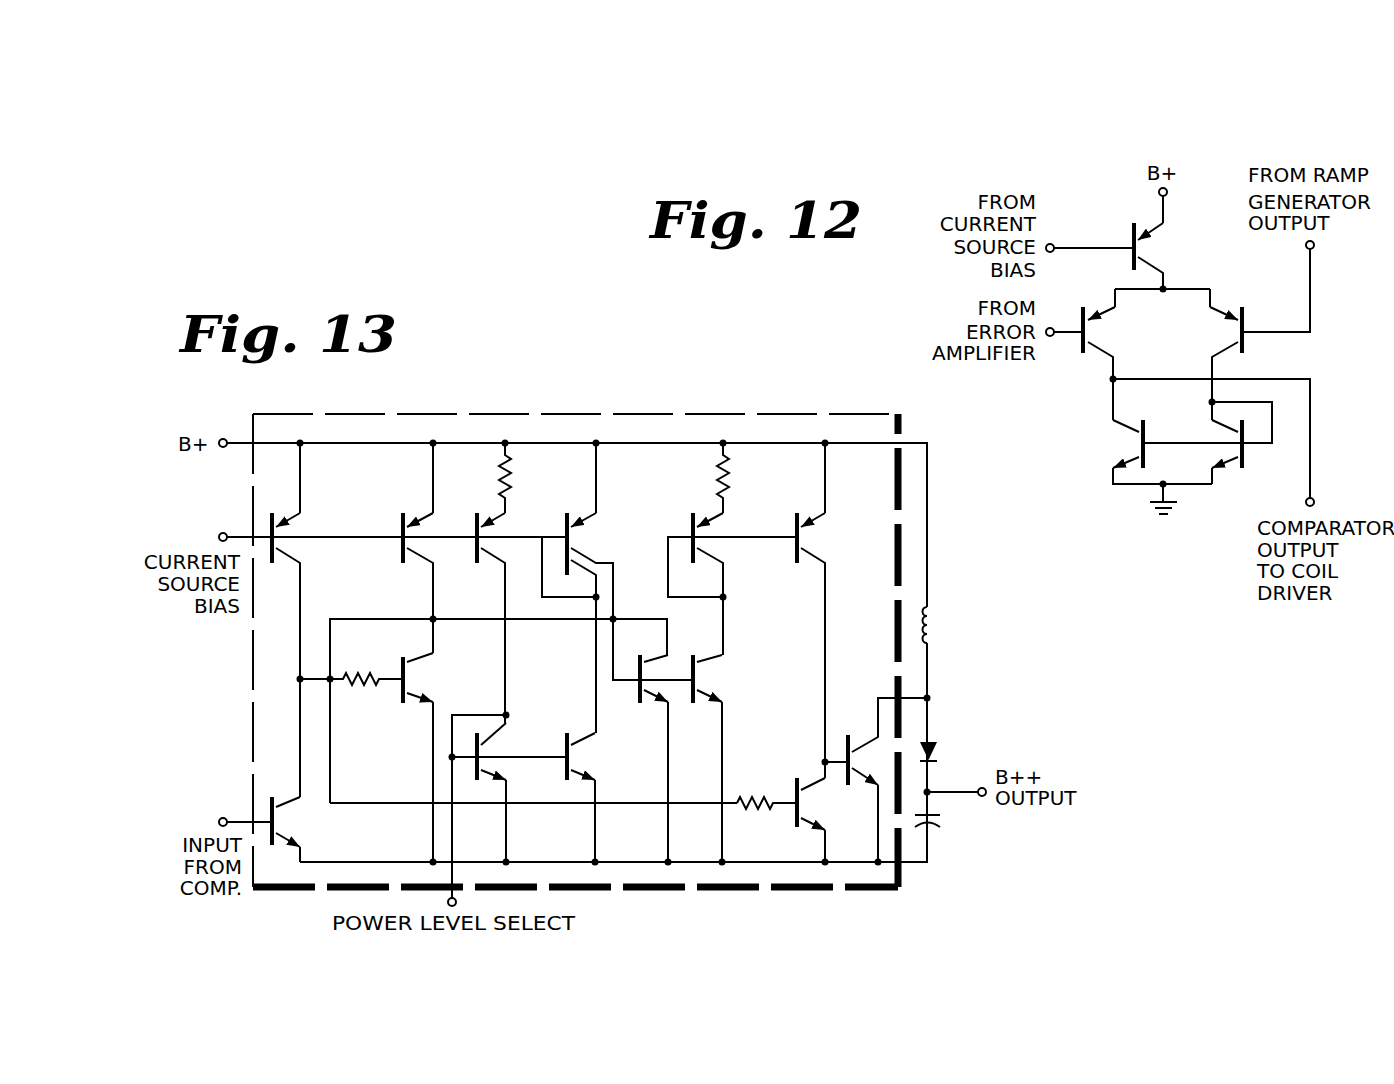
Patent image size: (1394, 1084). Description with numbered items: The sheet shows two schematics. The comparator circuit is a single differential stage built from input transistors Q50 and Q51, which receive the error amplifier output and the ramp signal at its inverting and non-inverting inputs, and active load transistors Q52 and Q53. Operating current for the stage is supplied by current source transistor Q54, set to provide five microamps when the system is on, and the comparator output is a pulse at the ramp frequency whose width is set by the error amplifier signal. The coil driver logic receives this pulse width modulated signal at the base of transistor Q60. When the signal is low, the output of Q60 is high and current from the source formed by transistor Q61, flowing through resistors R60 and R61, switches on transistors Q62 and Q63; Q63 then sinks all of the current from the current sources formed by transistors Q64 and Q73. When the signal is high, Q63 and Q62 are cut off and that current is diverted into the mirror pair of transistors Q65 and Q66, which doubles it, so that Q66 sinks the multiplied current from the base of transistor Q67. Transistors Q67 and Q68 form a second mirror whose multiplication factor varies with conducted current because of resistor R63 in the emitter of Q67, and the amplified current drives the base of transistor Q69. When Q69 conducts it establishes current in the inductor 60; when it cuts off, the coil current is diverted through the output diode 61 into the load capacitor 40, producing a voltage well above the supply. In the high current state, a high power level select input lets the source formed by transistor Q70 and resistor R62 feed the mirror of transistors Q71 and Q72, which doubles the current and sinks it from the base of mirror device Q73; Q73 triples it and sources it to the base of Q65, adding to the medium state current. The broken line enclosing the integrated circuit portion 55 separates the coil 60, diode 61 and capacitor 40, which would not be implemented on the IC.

In FIG. 13, the coil driver integrated circuit 55 is at (418, 414).
In FIG. 12, the input transistor Q50 is at (1102, 332).
In FIG. 12, the input transistor Q51 is at (1247, 300).
In FIG. 12, the active load transistor Q52 is at (1126, 443).
In FIG. 12, the active load transistor Q53 is at (1242, 468).
In FIG. 12, the current source transistor Q54 is at (1152, 248).
In FIG. 13, the transistor Q60 is at (288, 822).
In FIG. 13, the current source transistor Q61 is at (300, 527).
In FIG. 13, the transistor Q62 is at (795, 828).
In FIG. 13, the transistor Q63 is at (415, 680).
In FIG. 13, the current source transistor Q64 is at (403, 513).
In FIG. 13, the current mirror transistor Q65 is at (654, 717).
In FIG. 13, the current mirror transistor Q66 is at (703, 680).
In FIG. 13, the current mirror transistor Q67 is at (697, 516).
In FIG. 13, the current mirror transistor Q68 is at (797, 563).
In FIG. 13, the transistor Q69 is at (848, 735).
In FIG. 13, the current source transistor Q70 is at (477, 563).
In FIG. 13, the current mirror transistor Q71 is at (507, 742).
In FIG. 13, the current mirror transistor Q72 is at (577, 757).
In FIG. 13, the current mirror transistor Q73 is at (577, 538).
In FIG. 13, the resistor R60 is at (360, 673).
In FIG. 13, the resistor R61 is at (755, 797).
In FIG. 13, the resistor R62 is at (511, 478).
In FIG. 13, the resistor R63 is at (734, 478).
In FIG. 13, the inductor 60 is at (937, 627).
In FIG. 13, the output diode 61 is at (938, 738).
In FIG. 13, the load capacitor 40 is at (942, 822).